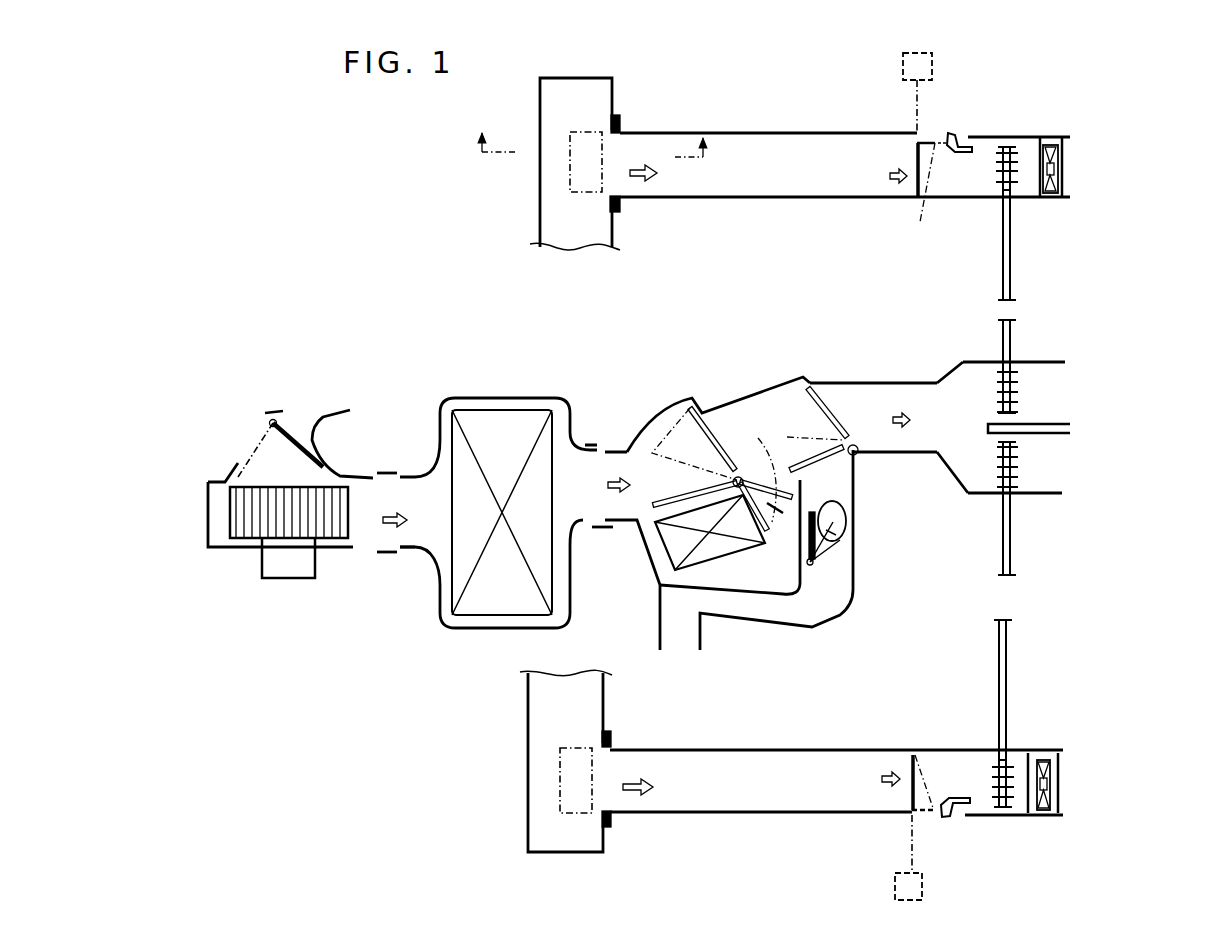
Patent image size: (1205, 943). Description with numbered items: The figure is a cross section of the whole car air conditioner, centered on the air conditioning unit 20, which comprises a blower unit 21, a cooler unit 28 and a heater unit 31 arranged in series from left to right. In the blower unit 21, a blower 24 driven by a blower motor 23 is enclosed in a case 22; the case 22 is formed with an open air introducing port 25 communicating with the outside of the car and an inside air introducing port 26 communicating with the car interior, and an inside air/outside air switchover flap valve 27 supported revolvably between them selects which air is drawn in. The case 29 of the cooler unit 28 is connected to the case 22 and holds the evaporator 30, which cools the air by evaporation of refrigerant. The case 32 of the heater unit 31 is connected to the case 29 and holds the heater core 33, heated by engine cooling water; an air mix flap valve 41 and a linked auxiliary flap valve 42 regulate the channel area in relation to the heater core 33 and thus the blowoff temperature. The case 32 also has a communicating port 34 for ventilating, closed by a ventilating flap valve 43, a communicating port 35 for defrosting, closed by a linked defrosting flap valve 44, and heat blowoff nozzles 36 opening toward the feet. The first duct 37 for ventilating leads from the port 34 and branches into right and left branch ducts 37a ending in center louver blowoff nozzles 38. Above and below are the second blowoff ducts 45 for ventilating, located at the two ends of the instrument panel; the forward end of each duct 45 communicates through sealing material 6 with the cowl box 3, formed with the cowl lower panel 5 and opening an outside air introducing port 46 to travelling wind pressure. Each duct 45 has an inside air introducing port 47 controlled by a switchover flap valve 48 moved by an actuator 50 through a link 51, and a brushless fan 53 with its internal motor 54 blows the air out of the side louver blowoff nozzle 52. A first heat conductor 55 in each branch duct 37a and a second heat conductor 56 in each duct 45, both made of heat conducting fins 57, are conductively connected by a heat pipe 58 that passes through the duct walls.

The cowl box 3 is at (597, 77).
The cowl lower panel 5 is at (589, 155).
The sealing material 6 is at (618, 130).
The air conditioning unit 20 is at (512, 382).
The blower unit 21 is at (207, 549).
The case of the blower unit 22 is at (208, 510).
The blower motor 23 is at (288, 568).
The blower 24 is at (247, 538).
The open air introducing port 25 is at (313, 417).
The inside air introducing port 26 is at (247, 453).
The inside air/outside air switchover flap valve 27 is at (245, 443).
The cooler unit 28 is at (444, 635).
The case of the cooler unit 29 is at (430, 587).
The evaporator 30 is at (476, 418).
The heater unit 31 is at (671, 401).
The case of the heater unit 32 is at (640, 537).
The heater core 33 is at (678, 592).
The communicating port for ventilating 34 is at (858, 403).
The communicating port for defrosting 35 is at (843, 508).
The heat blowoff nozzles 36 is at (687, 658).
The first duct for ventilating 37 is at (922, 383).
The branch ducts 37a is at (1048, 362).
The center louver blowoff nozzles 38 is at (1063, 397).
The air mix flap valve 41 is at (643, 470).
The auxiliary flap valve 42 is at (848, 446).
The ventilating flap valve 43 is at (790, 468).
The defrosting flap valve 44 is at (815, 557).
The second blowoff ducts for ventilating 45 is at (800, 130).
The outside air introducing port 46 is at (573, 187).
The inside air introducing port 47 is at (933, 133).
The inside air/outside air switchover flap valve 48 is at (918, 197).
The actuator 50 is at (932, 60).
The link 51 is at (917, 92).
The side louver blowoff nozzle 52 is at (1070, 165).
The brushless fan 53 is at (1062, 140).
The internal motor 54 is at (1045, 140).
The first heat conductor 55 is at (1034, 386).
The second heat conductor 56 is at (1024, 188).
The heat conducting fins 57 is at (1000, 182).
The heat pipe 58 is at (1013, 285).